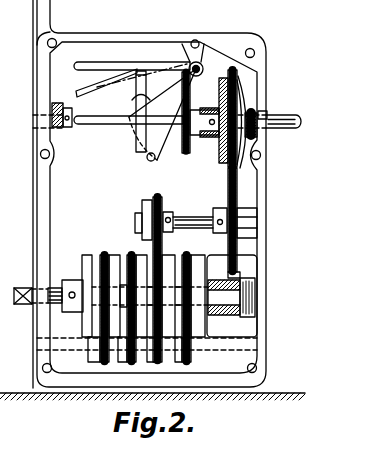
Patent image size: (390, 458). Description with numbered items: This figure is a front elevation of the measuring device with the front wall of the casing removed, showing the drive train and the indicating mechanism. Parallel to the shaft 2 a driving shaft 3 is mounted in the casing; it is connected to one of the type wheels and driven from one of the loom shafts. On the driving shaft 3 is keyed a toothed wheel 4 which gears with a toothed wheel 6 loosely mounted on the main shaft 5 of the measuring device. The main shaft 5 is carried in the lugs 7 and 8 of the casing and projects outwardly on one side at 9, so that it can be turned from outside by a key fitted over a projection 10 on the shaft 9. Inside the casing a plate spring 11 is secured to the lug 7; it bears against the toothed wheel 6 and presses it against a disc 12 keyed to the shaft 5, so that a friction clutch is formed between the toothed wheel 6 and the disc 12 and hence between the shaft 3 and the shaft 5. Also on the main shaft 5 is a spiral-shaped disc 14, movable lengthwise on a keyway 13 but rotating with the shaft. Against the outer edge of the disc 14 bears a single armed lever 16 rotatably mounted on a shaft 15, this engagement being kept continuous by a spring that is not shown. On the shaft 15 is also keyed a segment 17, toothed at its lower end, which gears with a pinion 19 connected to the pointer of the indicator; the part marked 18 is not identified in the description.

The shaft 2 is at (22, 288).
The driving shaft 3 is at (187, 222).
The toothed wheel 4 is at (237, 190).
The main shaft 5 is at (88, 128).
The toothed wheel 6 is at (231, 69).
The lug 7 is at (256, 113).
The lug 8 is at (58, 104).
The projecting shaft end 9 is at (298, 121).
The projection 10 is at (270, 115).
The plate spring 11 is at (241, 96).
The disc 12 is at (221, 78).
The keyway 13 is at (112, 125).
The disc 14 is at (192, 148).
The shaft 15 is at (189, 44).
The single armed lever 16 is at (107, 65).
The segment 17 is at (136, 96).
The cam segment 18 is at (159, 159).
The pinion 19 is at (148, 160).